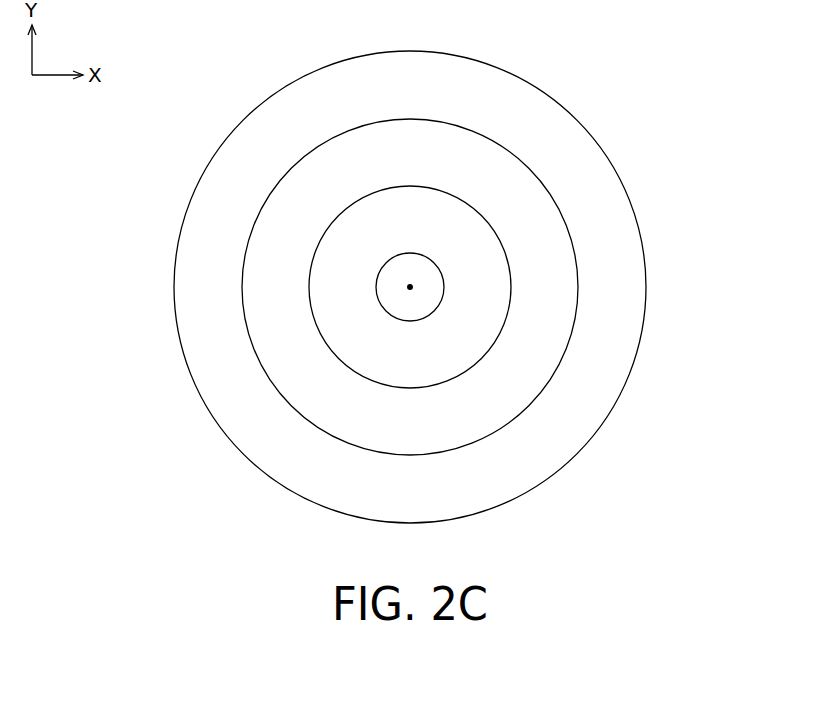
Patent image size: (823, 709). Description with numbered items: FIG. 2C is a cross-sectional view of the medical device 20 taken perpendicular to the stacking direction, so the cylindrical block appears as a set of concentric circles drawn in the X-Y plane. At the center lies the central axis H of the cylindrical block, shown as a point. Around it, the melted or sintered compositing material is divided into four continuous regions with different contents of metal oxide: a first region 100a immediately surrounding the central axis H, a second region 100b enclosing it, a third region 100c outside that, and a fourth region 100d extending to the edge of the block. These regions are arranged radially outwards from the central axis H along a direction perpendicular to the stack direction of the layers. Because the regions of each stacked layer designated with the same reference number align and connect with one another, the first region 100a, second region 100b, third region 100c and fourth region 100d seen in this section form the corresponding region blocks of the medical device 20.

The medical device 20 is at (162, 45).
The central axis H is at (410, 287).
The first region 100a is at (433, 283).
The second region 100b is at (490, 285).
The third region 100c is at (555, 280).
The fourth region 100d is at (630, 282).